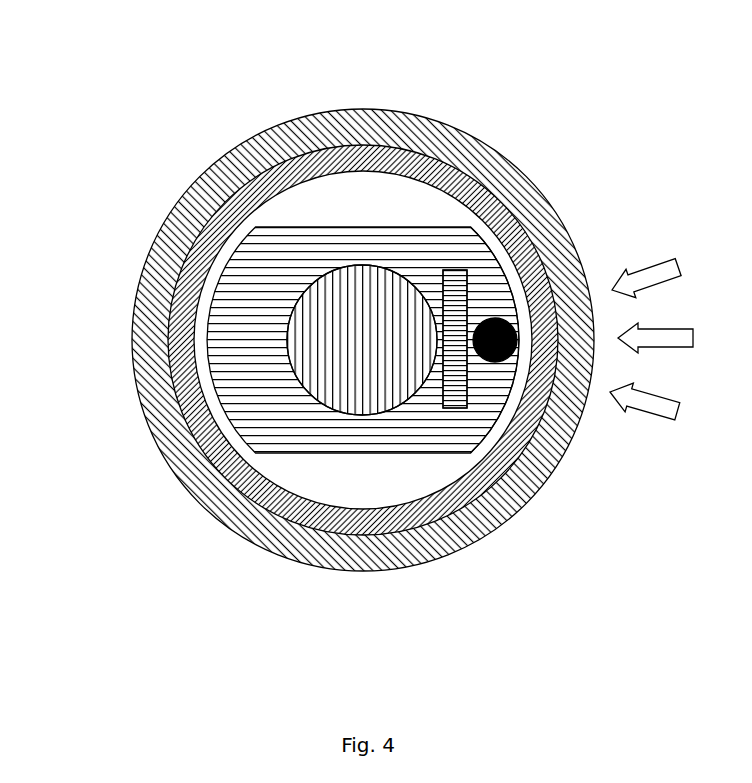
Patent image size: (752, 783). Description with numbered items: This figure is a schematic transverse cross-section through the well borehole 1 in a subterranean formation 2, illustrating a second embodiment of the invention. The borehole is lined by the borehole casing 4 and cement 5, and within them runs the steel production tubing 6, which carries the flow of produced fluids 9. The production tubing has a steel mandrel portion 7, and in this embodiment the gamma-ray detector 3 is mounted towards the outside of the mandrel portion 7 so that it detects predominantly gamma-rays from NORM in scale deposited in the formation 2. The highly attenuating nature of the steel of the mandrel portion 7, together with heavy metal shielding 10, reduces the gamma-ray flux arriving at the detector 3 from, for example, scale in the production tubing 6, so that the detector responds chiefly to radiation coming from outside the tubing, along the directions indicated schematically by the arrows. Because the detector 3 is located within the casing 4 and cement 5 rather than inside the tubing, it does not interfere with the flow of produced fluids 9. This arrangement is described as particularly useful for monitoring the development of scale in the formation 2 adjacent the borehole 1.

The well borehole 1 is at (505, 152).
The subterranean formation 2 is at (155, 132).
The gamma-ray detector 3 is at (518, 323).
The borehole casing 4 is at (168, 317).
The cement 5 is at (150, 393).
The steel production tubing 6 is at (295, 391).
The steel mandrel portion 7 is at (493, 373).
The produced fluids 9 is at (380, 372).
The heavy metal shielding 10 is at (453, 275).